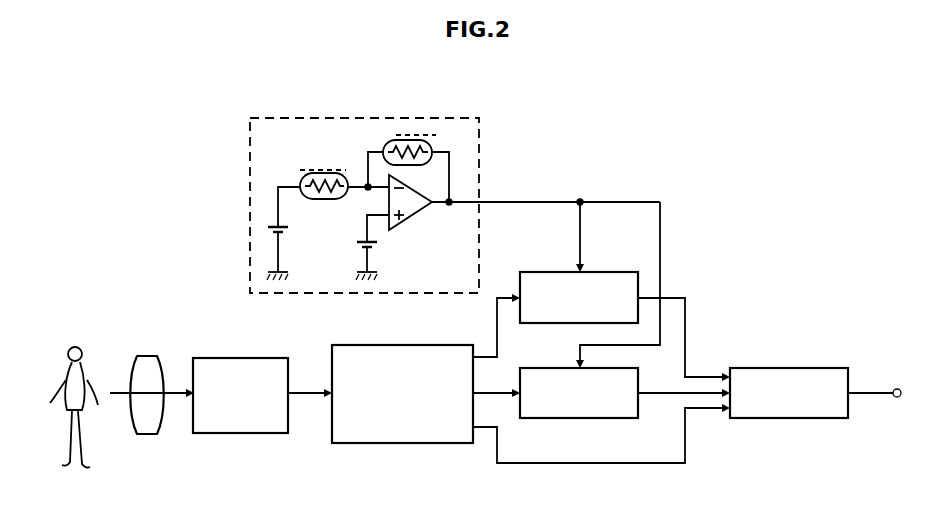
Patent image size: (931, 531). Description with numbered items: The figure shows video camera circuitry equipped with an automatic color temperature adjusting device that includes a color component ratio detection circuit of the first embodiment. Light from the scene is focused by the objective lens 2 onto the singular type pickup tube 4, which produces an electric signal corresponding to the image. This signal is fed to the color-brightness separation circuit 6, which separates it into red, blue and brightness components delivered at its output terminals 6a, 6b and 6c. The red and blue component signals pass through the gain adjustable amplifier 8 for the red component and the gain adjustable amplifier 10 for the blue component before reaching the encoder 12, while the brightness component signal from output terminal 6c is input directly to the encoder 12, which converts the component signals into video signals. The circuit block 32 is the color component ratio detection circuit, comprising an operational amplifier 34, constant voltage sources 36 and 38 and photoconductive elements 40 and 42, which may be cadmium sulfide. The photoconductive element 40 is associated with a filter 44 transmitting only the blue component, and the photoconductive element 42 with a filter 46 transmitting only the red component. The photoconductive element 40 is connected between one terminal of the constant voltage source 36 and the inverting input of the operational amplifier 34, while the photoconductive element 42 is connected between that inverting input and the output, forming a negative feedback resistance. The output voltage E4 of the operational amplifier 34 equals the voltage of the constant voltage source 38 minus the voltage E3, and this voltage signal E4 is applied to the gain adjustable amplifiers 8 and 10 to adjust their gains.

The objective lens 2 is at (147, 418).
The singular type pickup tube 4 is at (238, 434).
The color-brightness separation circuit 6 is at (400, 437).
The output terminal 6a is at (492, 340).
The output terminal 6b is at (502, 386).
The output terminal 6c is at (490, 432).
The gain adjustable amplifier for the red component 8 is at (602, 272).
The gain adjustable amplifier for the blue component 10 is at (557, 368).
The encoder 12 is at (815, 374).
The circuit block 32 is at (328, 293).
The operational amplifier 34 is at (420, 207).
The constant voltage source 36 is at (270, 228).
The constant voltage source 38 is at (357, 232).
The photoconductive element 40 is at (300, 178).
The photoconductive element 42 is at (445, 147).
The filter 44 is at (318, 170).
The filter 46 is at (403, 135).
The voltage E3 is at (452, 118).
The output voltage E4 is at (612, 224).